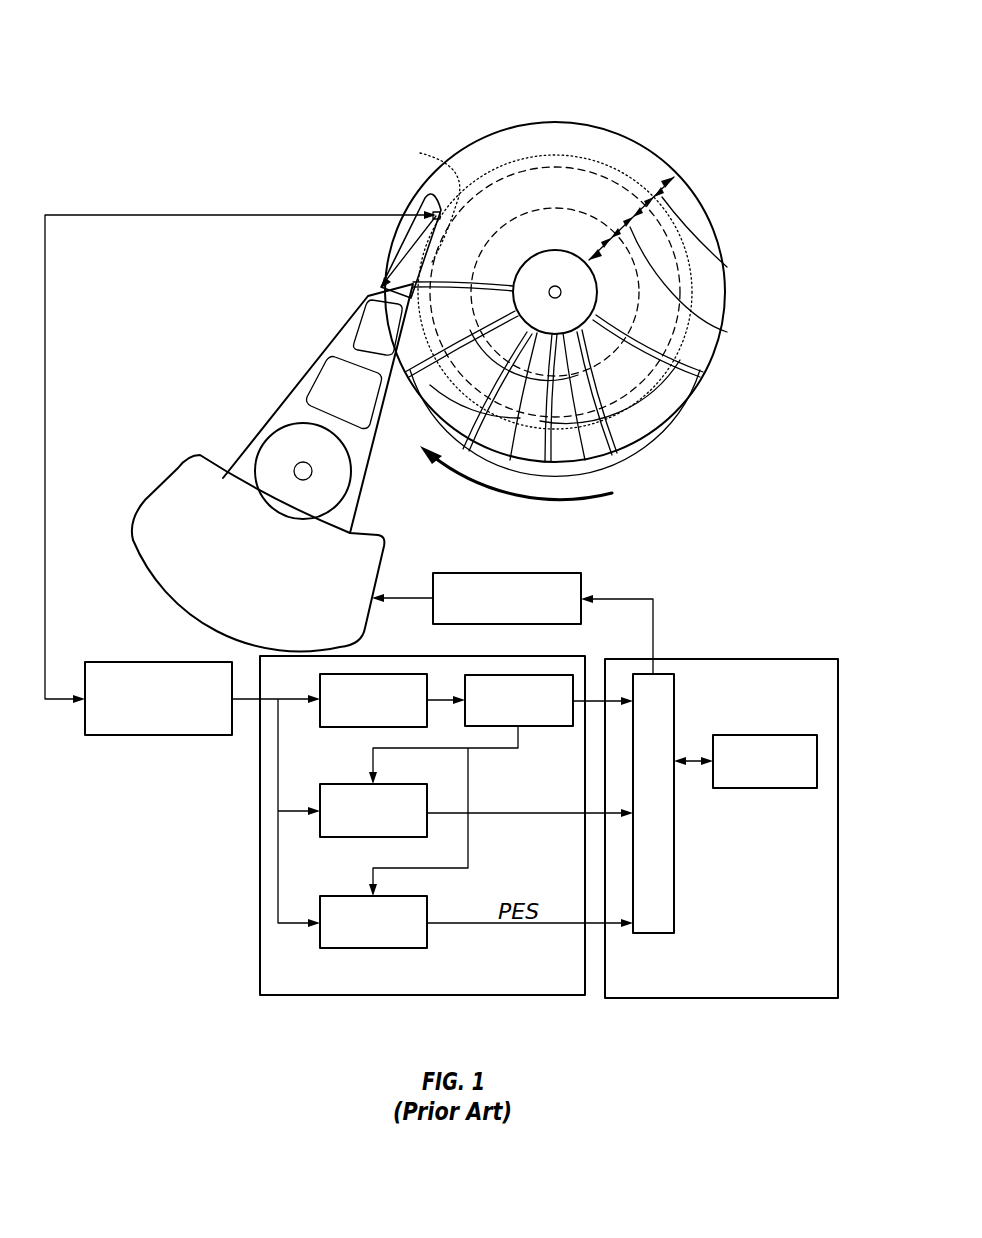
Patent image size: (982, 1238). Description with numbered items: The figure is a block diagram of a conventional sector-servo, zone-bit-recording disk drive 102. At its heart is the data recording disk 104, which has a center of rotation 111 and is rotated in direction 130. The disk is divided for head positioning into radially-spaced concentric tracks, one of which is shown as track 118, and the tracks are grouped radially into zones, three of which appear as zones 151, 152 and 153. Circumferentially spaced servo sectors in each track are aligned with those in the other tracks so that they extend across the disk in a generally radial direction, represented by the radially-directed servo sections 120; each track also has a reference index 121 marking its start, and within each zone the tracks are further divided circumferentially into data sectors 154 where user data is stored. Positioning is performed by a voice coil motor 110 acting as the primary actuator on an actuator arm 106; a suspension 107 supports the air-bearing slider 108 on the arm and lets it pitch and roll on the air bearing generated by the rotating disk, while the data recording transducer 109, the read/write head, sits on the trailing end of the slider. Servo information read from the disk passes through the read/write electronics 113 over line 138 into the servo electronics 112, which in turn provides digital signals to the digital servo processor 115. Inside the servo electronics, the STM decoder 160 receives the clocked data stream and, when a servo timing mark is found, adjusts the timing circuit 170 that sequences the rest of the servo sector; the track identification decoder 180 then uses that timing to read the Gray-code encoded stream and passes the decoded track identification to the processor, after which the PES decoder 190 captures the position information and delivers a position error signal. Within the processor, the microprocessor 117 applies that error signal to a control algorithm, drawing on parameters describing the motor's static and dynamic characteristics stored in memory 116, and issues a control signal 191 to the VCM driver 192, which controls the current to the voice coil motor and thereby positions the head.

The disk drive 102 is at (146, 50).
The data recording disk 104 is at (522, 124).
The actuator arm 106 is at (354, 315).
The suspension 107 is at (405, 266).
The air-bearing slider 108 is at (436, 210).
The data recording transducer 109 is at (440, 202).
The voice coil motor 110 is at (198, 460).
The center of rotation 111 is at (555, 286).
The servo electronics 112 is at (260, 793).
The read/write electronics 113 is at (135, 662).
The digital servo processor 115 is at (756, 659).
The memory 116 is at (770, 735).
The microprocessor 117 is at (675, 710).
The track 118 is at (537, 285).
The servo sections 120 is at (638, 438).
The reference index 121 is at (699, 379).
The direction of rotation 130 is at (562, 505).
The read signal line 138 is at (120, 212).
The zone 151 is at (727, 267).
The zone 152 is at (727, 332).
The zone 153 is at (603, 240).
The data sectors 154 is at (676, 399).
The STM decoder 160 is at (340, 727).
The timing circuit 170 is at (523, 727).
The track identification decoder 180 is at (340, 837).
The PES decoder 190 is at (320, 940).
The control signal 191 is at (654, 624).
The VCM driver 192 is at (520, 573).